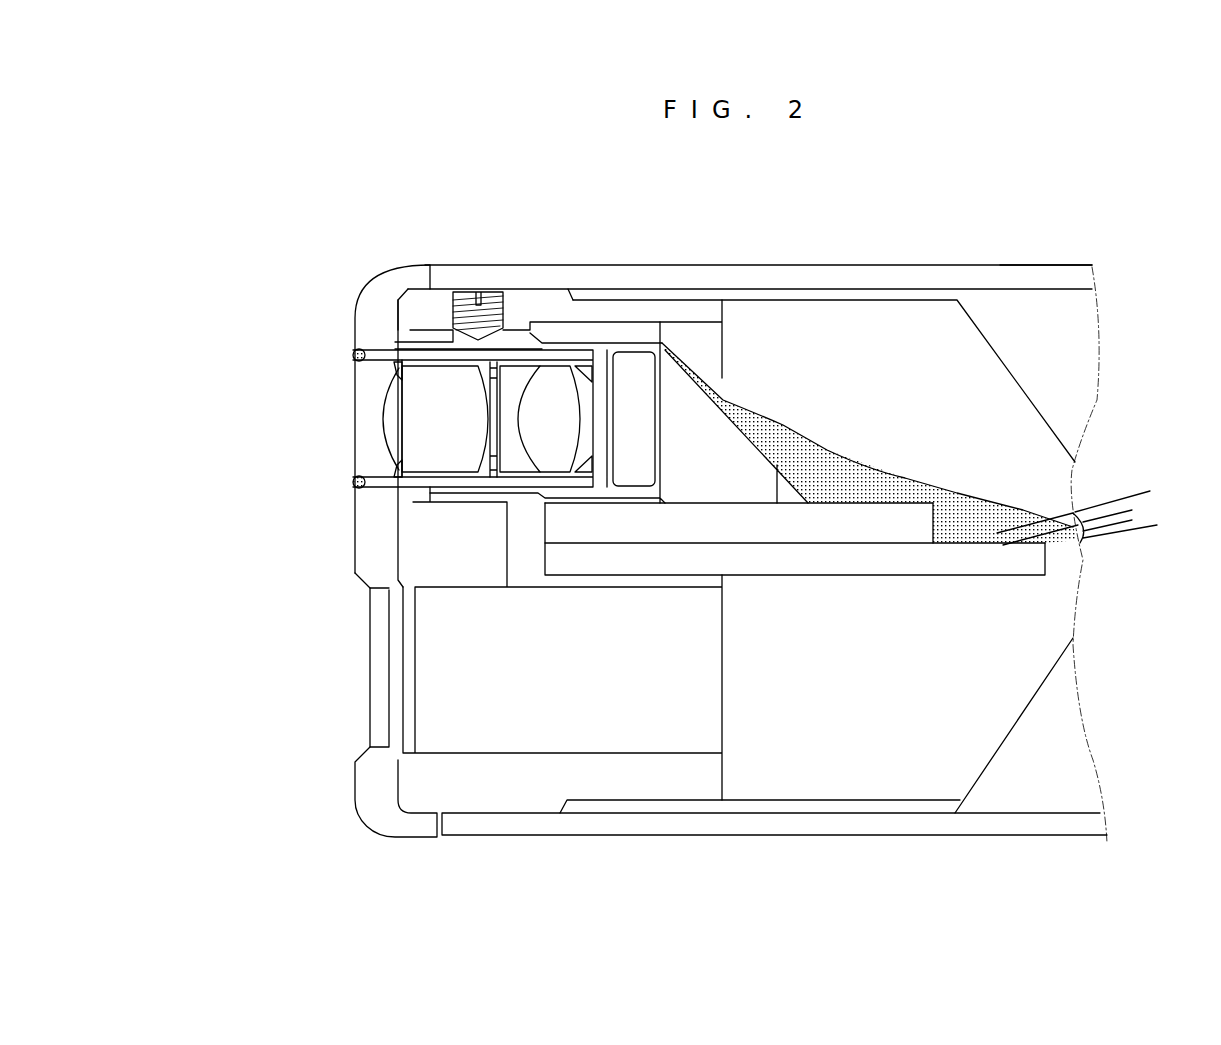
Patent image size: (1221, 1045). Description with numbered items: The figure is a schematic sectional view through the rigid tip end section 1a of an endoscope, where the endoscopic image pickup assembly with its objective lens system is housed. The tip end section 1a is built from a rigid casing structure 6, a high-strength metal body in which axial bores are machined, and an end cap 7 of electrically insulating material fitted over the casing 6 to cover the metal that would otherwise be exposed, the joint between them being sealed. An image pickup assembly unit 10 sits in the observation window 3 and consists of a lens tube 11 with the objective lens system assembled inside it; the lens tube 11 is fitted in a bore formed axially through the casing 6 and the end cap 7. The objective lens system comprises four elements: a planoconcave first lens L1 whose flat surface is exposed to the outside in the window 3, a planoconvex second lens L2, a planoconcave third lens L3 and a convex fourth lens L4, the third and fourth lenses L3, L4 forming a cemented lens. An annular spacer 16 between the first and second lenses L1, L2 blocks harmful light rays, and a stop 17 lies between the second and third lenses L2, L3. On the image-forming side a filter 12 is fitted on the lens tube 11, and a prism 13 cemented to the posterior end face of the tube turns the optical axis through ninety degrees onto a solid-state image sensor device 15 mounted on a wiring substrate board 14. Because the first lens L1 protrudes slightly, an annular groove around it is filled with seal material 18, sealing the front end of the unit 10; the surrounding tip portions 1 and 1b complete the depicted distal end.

The distal end portion 1 is at (935, 255).
The rigid tip end section 1a is at (343, 815).
The outer tube 1b is at (1031, 254).
The observation window 3 is at (494, 355).
The rigid casing structure 6 is at (623, 792).
The end cap 7 is at (358, 312).
The image pickup assembly unit 10 is at (406, 340).
The lens tube 11 is at (420, 480).
The filter 12 is at (648, 380).
The prism 13 is at (750, 457).
The wiring substrate board 14 is at (1013, 565).
The solid-state image sensor device 15 is at (900, 530).
The spacer 16 is at (393, 378).
The stop 17 is at (483, 393).
The seal material 18 is at (353, 352).
The first lens L1 is at (363, 408).
The second lens L2 is at (435, 377).
The third lens L3 is at (517, 373).
The fourth lens L4 is at (558, 378).